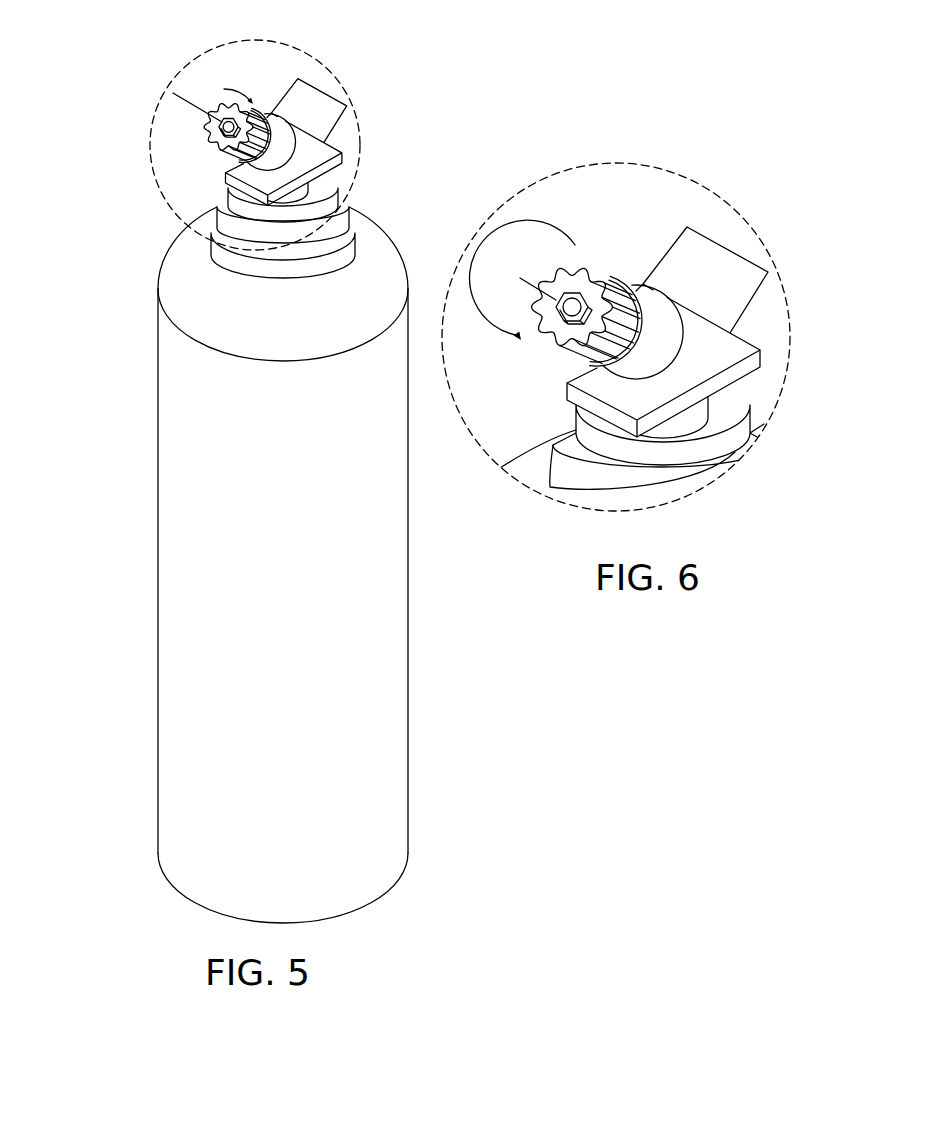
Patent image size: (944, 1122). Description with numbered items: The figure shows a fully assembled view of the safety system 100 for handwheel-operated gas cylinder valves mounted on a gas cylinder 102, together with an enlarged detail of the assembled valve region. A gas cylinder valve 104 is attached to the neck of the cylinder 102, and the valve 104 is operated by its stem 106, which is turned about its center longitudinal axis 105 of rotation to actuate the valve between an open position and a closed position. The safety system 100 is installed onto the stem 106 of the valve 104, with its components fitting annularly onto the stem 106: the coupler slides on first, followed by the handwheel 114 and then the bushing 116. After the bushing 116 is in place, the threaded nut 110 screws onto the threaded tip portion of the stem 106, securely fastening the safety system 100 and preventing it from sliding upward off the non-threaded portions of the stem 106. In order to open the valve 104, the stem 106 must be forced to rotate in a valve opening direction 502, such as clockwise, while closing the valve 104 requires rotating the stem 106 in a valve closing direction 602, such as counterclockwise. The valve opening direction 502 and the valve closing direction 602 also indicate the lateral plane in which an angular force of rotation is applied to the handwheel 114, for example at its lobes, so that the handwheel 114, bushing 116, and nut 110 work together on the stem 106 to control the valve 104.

In FIG. 5, the safety system 100 is at (130, 62).
In FIG. 5, the cylinder 102 is at (347, 665).
In FIG. 6, the cylinder 102 is at (530, 467).
In FIG. 5, the gas cylinder valve 104 is at (360, 67).
In FIG. 6, the gas cylinder valve 104 is at (765, 222).
In FIG. 5, the center longitudinal axis of rotation 105 is at (182, 107).
In FIG. 6, the center longitudinal axis of rotation 105 is at (523, 288).
In FIG. 6, the stem 106 is at (583, 298).
In FIG. 5, the threaded nut 110 is at (227, 127).
In FIG. 6, the threaded nut 110 is at (570, 300).
In FIG. 5, the handwheel 114 is at (222, 158).
In FIG. 6, the handwheel 114 is at (632, 285).
In FIG. 5, the bushing 116 is at (217, 158).
In FIG. 6, the bushing 116 is at (610, 278).
In FIG. 5, the valve opening direction 502 is at (233, 98).
In FIG. 6, the valve closing direction 602 is at (527, 273).